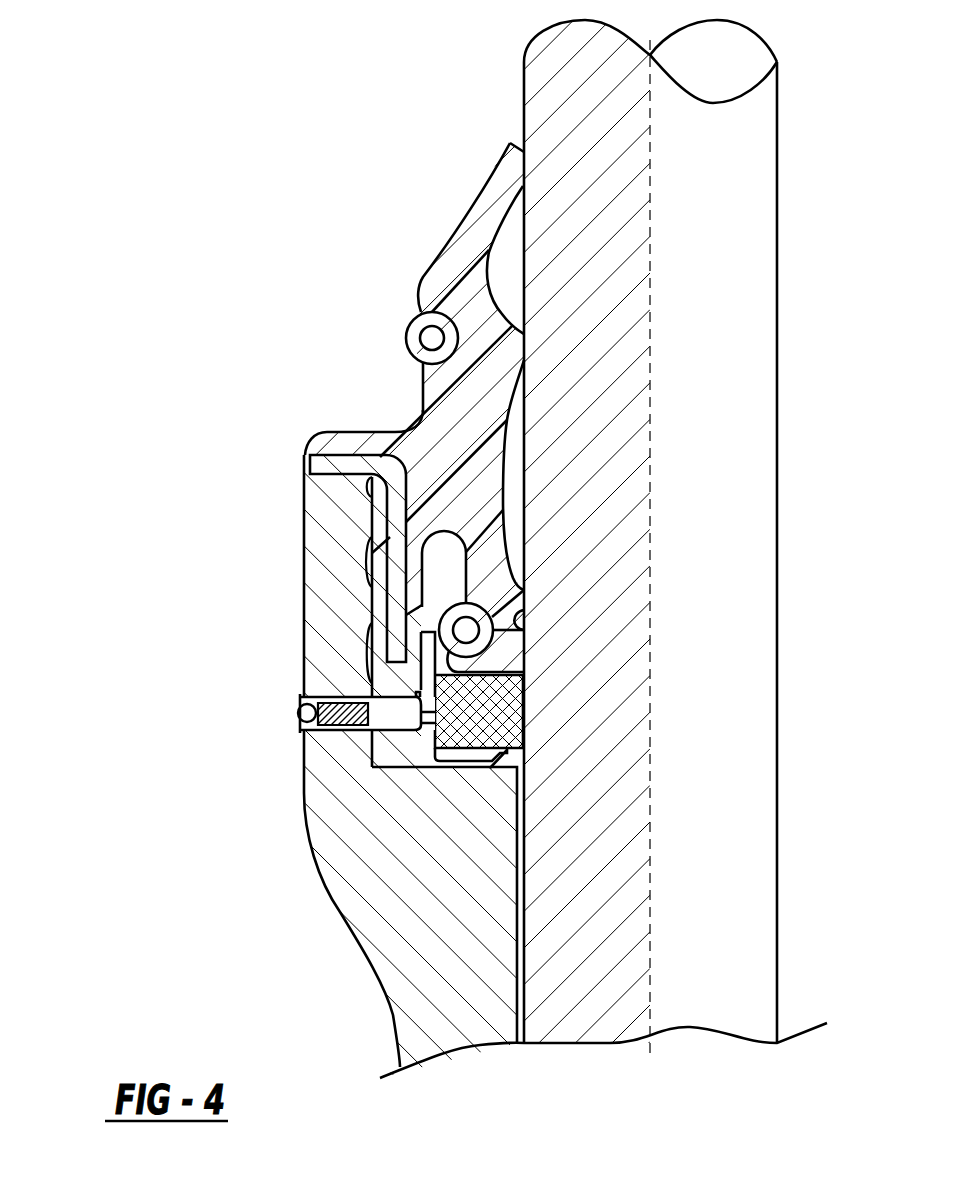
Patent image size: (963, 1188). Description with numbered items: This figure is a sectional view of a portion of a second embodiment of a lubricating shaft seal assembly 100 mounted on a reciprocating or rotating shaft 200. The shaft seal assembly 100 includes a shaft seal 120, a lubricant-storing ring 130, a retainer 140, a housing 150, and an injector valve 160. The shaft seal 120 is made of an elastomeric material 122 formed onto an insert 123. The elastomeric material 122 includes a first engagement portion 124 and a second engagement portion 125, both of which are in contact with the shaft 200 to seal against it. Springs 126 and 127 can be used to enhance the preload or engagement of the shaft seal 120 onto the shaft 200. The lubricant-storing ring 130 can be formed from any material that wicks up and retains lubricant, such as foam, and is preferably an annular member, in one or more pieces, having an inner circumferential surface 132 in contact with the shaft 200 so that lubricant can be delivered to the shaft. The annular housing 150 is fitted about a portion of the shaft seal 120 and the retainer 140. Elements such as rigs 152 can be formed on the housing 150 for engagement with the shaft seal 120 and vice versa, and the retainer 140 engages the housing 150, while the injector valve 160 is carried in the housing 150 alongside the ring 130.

The shaft seal assembly 100 is at (453, 595).
The shaft seal 120 is at (410, 393).
The elastomeric material 122 is at (350, 447).
The insert 123 is at (312, 462).
The first engagement portion 124 is at (498, 186).
The second engagement portion 125 is at (510, 585).
The spring 126 is at (421, 317).
The spring 127 is at (522, 629).
The lubricant-storing ring 130 is at (538, 690).
The inner circumferential surface 132 is at (527, 722).
The retainer 140 is at (424, 802).
The housing 150 is at (290, 799).
The rigs 152 is at (367, 613).
The injector valve 160 is at (290, 695).
The shaft 200 is at (590, 958).